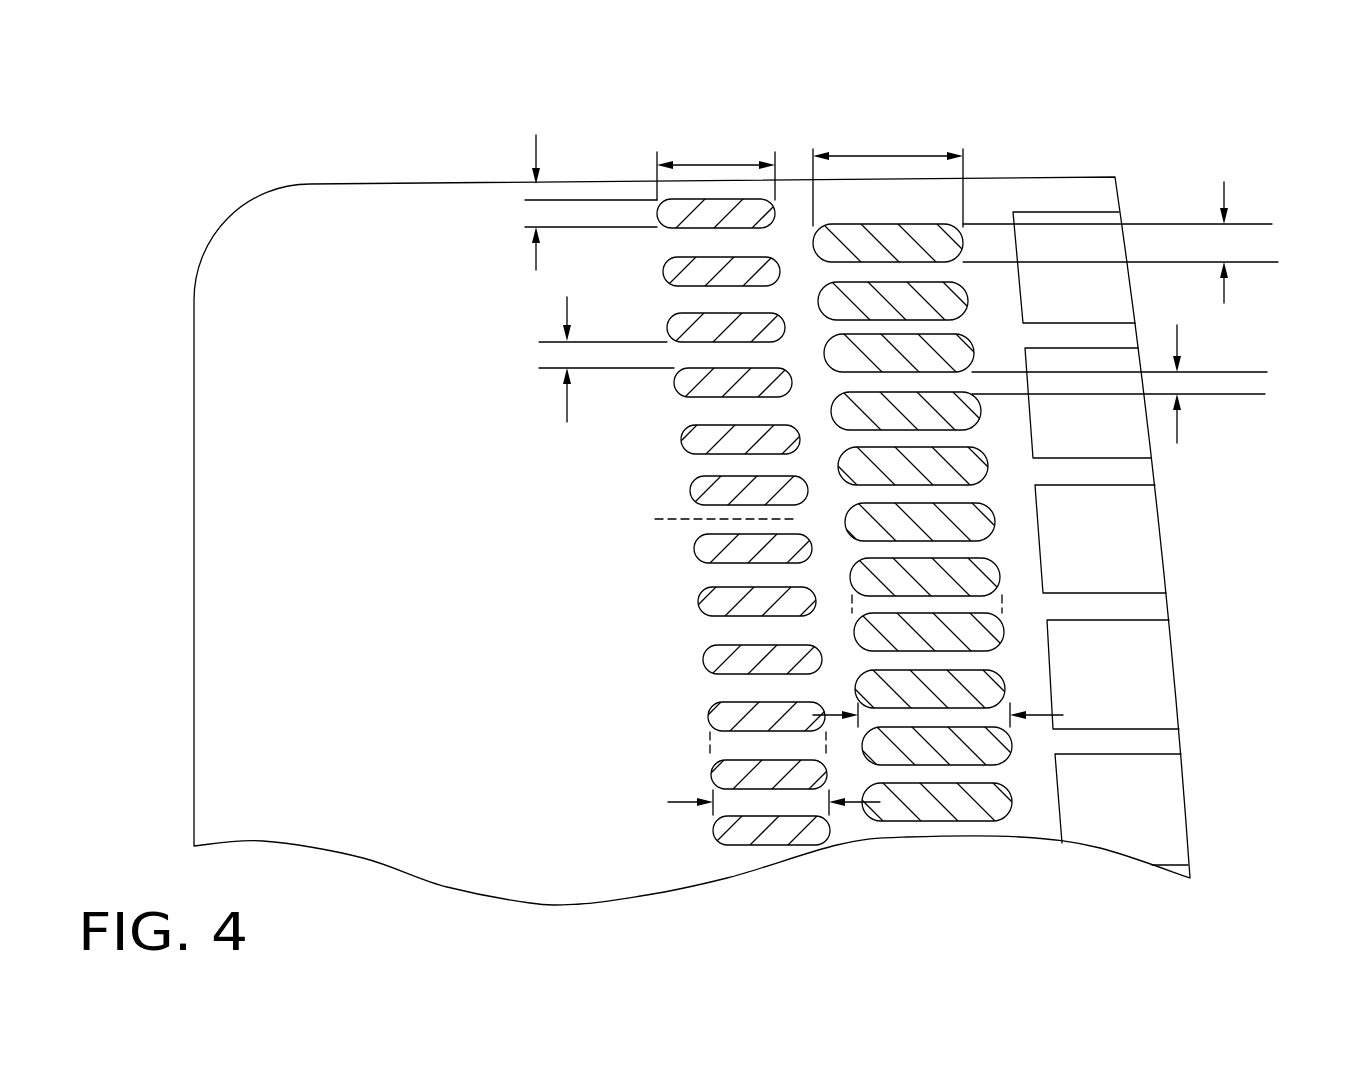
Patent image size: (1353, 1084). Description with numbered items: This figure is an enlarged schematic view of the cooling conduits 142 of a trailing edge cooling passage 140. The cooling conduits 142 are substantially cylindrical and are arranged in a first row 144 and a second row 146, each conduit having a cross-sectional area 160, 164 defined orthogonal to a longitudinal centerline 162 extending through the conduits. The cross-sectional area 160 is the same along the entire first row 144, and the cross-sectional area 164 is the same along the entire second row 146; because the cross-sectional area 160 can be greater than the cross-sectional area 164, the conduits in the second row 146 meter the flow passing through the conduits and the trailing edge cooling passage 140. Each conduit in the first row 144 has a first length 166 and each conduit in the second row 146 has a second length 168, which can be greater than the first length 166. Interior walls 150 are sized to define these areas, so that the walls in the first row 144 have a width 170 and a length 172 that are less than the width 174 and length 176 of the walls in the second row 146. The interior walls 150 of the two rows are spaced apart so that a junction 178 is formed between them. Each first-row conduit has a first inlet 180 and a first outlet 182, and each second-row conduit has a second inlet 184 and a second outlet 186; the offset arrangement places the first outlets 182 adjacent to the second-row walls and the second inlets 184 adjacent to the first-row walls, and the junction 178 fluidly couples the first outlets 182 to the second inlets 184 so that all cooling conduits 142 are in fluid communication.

The trailing edge cooling passage 140 is at (440, 222).
The cooling conduit 142 is at (688, 419).
The first row 144 is at (733, 182).
The second row 146 is at (850, 211).
The interior wall 150 is at (722, 715).
The cross-sectional area 160 is at (567, 407).
The longitudinal centerline 162 is at (678, 519).
The cross-sectional area 164 is at (1178, 440).
The first length 166 is at (668, 803).
The second length 168 is at (1063, 715).
The width 170 is at (536, 148).
The length 172 is at (712, 165).
The width 174 is at (1225, 183).
The length 176 is at (915, 156).
The junction 178 is at (793, 268).
The first inlet 180 is at (708, 746).
The first outlet 182 is at (828, 757).
The second inlet 184 is at (853, 608).
The second outlet 186 is at (1003, 601).